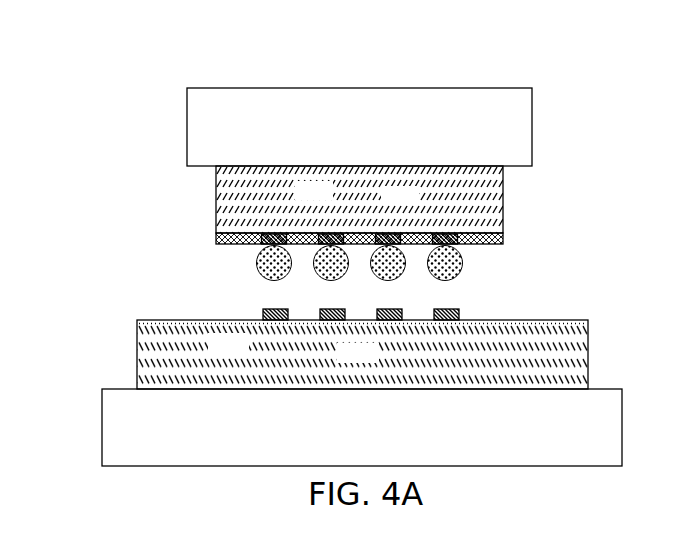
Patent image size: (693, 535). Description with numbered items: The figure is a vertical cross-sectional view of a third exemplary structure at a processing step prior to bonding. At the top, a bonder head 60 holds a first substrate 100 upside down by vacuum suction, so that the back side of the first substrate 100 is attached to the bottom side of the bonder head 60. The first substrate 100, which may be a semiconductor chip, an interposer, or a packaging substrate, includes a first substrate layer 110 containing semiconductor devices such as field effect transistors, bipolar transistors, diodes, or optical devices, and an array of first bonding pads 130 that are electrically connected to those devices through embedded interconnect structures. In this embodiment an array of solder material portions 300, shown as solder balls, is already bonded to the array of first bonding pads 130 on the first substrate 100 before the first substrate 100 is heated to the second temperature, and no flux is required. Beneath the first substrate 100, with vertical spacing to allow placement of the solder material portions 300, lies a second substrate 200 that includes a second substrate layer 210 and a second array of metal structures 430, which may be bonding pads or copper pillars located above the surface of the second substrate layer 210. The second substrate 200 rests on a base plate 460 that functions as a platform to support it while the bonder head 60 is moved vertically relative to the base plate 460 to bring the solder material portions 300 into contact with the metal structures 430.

The bonder head 60 is at (362, 137).
The first substrate 100 is at (512, 168).
The first substrate layer 110 is at (331, 202).
The first bonding pads 130 is at (452, 234).
The solder material portions 300 is at (463, 263).
The second substrate 200 is at (598, 307).
The second substrate layer 210 is at (377, 363).
The second array of metal structures 430 is at (274, 316).
The base plate 460 is at (379, 437).